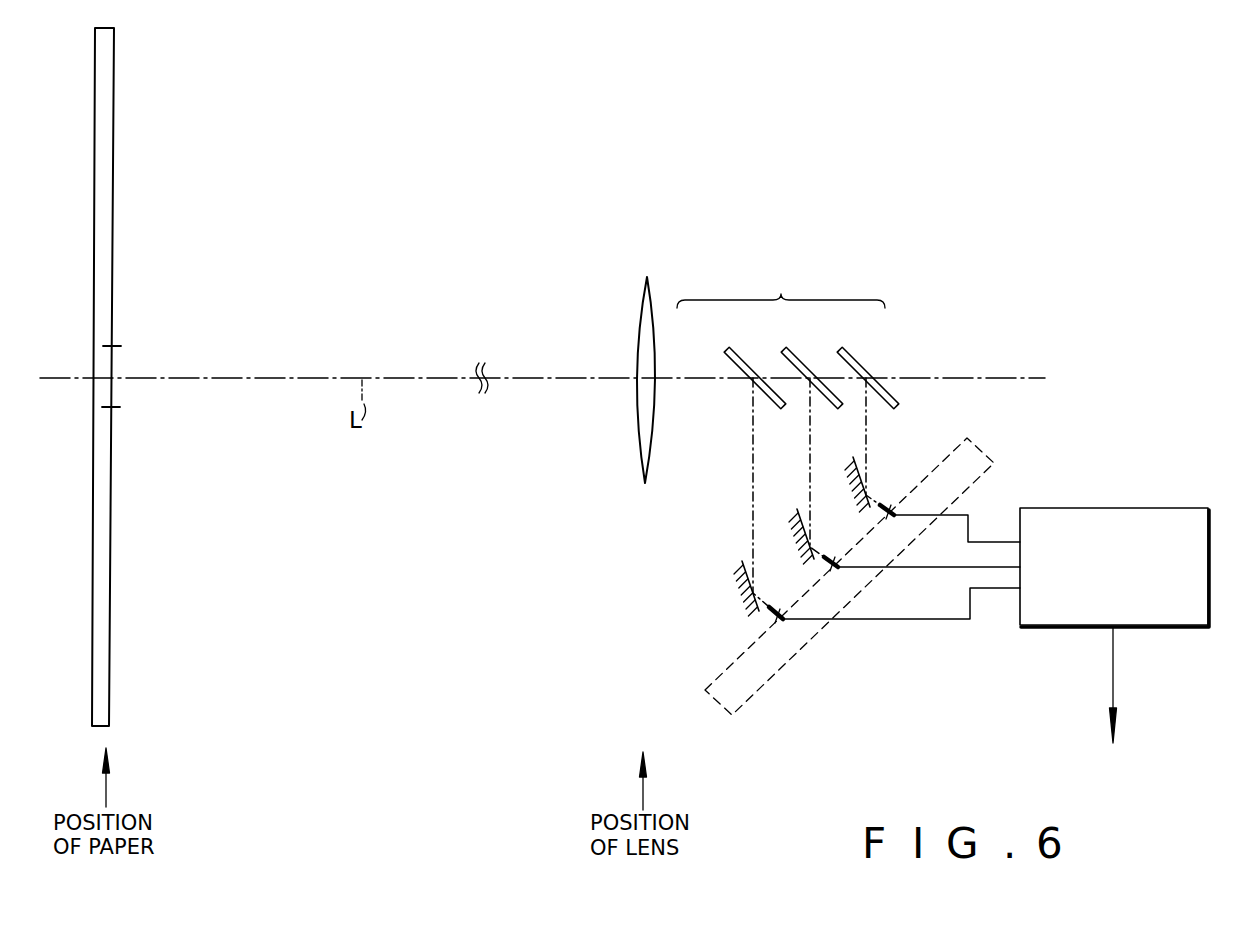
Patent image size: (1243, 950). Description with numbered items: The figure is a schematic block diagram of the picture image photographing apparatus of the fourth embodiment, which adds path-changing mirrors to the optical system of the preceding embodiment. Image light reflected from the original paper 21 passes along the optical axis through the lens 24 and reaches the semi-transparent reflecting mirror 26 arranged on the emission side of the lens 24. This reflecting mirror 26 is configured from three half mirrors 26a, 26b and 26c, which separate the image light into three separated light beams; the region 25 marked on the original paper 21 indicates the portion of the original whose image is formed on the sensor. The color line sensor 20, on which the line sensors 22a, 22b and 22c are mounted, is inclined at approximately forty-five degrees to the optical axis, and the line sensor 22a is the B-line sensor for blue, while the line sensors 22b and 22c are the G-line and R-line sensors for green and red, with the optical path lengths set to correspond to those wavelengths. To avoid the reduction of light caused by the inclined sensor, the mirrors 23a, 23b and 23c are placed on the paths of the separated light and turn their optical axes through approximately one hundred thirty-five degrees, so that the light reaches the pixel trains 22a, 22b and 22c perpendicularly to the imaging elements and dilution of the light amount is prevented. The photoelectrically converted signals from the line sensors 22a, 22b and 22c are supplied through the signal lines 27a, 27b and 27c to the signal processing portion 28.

The color line sensor 20 is at (742, 708).
The original paper 21 is at (113, 186).
The line sensor 22a is at (782, 623).
The line sensor 22b is at (837, 570).
The line sensor 22c is at (895, 517).
The mirror 23a is at (740, 575).
The mirror 23b is at (797, 523).
The mirror 23c is at (856, 459).
The lens 24 is at (637, 334).
The region of the original paper 25 is at (112, 388).
The semi-transparent reflecting mirror 26 is at (788, 338).
The half mirror 26a is at (732, 350).
The half mirror 26b is at (792, 350).
The half mirror 26c is at (846, 352).
The signal line 27a is at (930, 620).
The signal line 27b is at (933, 568).
The signal line 27c is at (988, 541).
The signal processing portion 28 is at (1112, 508).